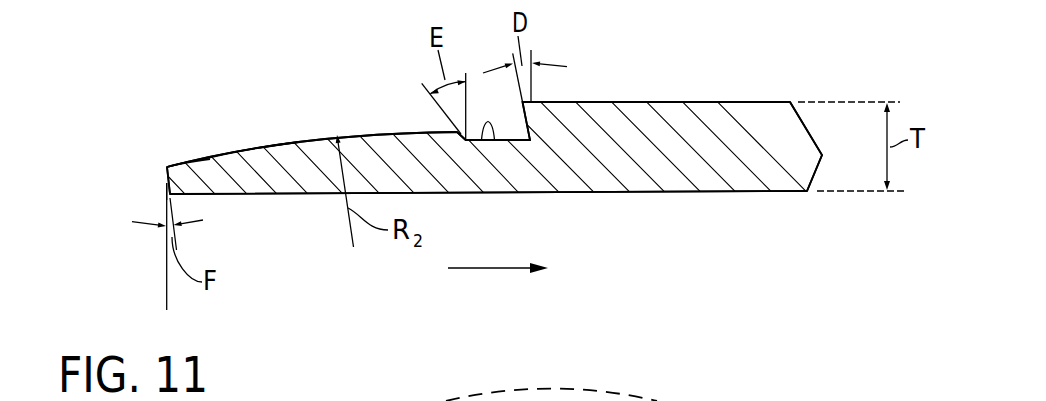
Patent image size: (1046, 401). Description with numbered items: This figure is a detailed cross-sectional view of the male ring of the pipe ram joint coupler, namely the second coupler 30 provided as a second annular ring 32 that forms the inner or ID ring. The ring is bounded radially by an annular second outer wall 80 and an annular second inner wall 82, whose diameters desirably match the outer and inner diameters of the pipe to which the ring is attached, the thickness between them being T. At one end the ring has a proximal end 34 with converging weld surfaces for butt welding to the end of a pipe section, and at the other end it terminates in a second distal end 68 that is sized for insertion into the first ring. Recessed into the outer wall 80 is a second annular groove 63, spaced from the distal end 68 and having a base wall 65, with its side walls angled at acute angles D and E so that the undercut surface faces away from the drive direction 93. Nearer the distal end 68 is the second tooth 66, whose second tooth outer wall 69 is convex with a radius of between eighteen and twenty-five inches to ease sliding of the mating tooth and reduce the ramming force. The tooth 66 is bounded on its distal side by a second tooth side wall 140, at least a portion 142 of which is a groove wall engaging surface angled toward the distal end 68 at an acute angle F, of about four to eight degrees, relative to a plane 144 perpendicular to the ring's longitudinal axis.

The second coupler 30 is at (720, 72).
The second annular ring 32 is at (665, 98).
The proximal end 34 is at (827, 156).
The second annular groove 63 is at (507, 130).
The base wall 65 is at (493, 126).
The second tooth 66 is at (254, 163).
The second distal end 68 is at (167, 167).
The second tooth outer wall 69 is at (305, 138).
The second outer wall 80 is at (627, 102).
The second inner wall 82 is at (615, 192).
The drive direction 93 is at (493, 270).
The second tooth side wall 140 is at (150, 191).
The groove wall engaging surface 142 is at (166, 181).
The plane 144 is at (166, 273).